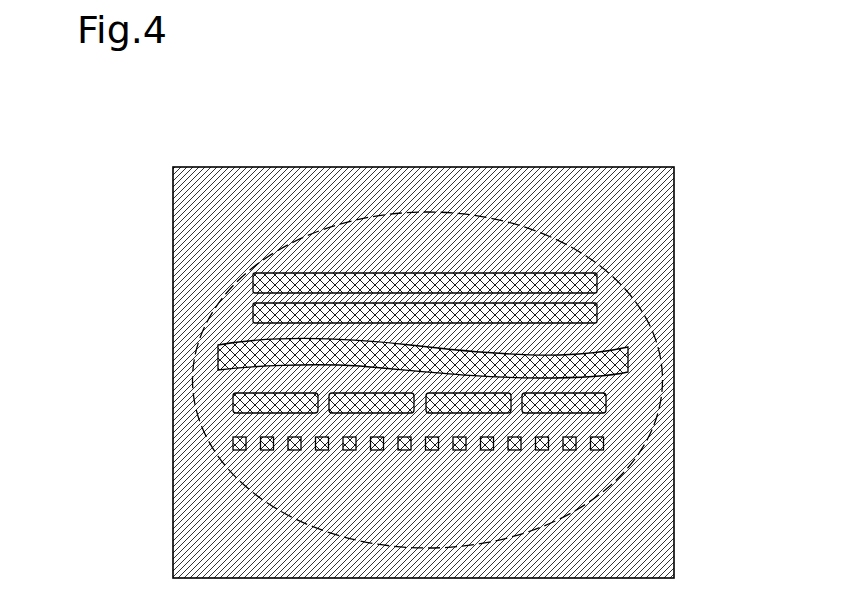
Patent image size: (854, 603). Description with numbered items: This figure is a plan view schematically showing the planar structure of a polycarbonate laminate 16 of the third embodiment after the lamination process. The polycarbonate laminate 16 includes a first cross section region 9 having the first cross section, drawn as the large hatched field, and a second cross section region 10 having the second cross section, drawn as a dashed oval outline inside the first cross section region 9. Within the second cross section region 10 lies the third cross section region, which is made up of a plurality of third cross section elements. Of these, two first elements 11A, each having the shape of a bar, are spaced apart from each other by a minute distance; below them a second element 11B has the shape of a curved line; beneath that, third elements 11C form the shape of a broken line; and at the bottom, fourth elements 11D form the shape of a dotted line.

The first cross section region 9 is at (393, 167).
The second cross section region 10 is at (567, 244).
The polycarbonate laminate 16 is at (553, 111).
The first elements 11A is at (597, 278).
The second element 11B is at (628, 349).
The third elements 11C is at (233, 395).
The fourth elements 11D is at (233, 440).